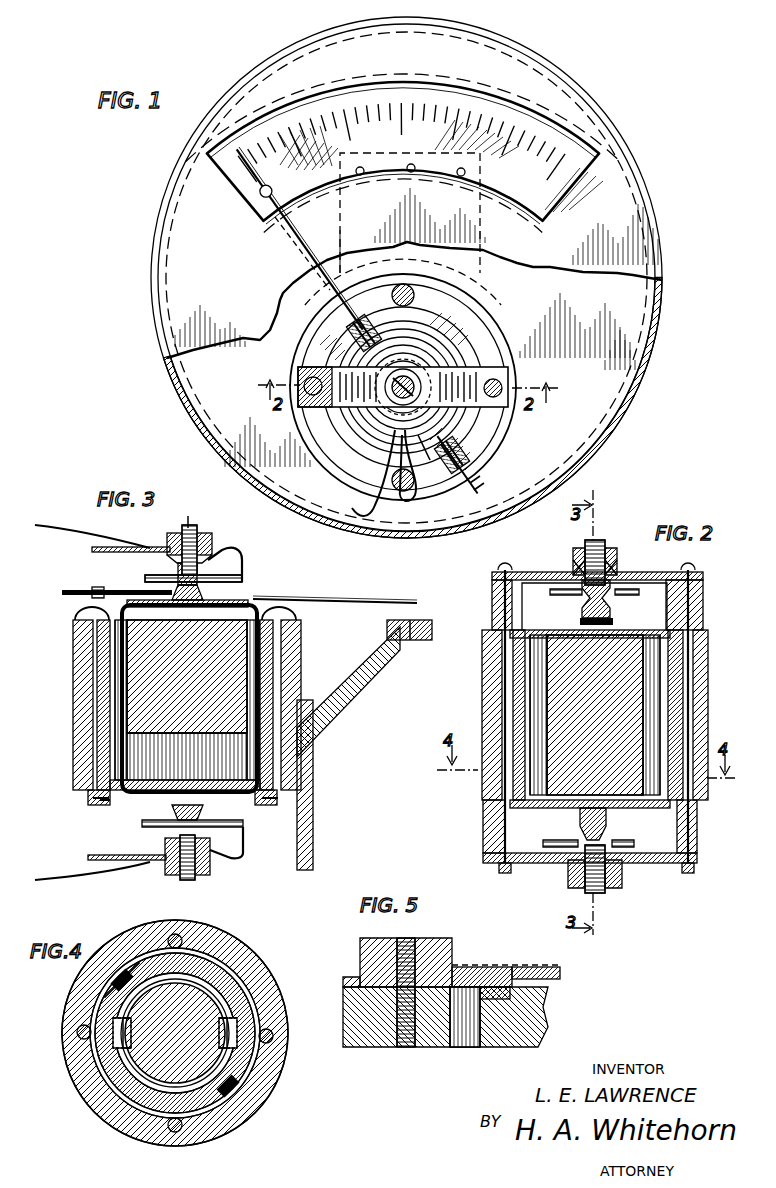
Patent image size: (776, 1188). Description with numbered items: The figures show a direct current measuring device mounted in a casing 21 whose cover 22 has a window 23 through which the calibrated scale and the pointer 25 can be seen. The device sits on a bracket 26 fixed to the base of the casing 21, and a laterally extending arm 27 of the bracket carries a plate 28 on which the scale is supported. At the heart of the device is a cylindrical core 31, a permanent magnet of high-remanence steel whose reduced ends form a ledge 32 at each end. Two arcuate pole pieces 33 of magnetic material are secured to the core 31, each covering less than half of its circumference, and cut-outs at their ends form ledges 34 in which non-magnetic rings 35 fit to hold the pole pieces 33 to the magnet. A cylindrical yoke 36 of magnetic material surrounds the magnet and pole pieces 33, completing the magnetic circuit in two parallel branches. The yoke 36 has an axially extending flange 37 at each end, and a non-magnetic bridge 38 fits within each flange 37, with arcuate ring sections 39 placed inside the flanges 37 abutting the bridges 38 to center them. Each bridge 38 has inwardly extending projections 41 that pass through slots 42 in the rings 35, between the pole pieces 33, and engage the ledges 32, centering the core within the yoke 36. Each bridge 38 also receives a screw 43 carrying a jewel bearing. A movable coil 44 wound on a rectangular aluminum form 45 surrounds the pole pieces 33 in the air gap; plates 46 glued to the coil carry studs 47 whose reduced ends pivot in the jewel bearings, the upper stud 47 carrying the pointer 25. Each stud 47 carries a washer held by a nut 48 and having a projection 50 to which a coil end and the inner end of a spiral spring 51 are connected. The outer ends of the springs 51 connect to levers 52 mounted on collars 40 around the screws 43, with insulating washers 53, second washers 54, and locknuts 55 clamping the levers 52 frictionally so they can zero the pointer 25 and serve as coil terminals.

In FIG. 1, the casing 21 is at (640, 328).
In FIG. 1, the cover 22 is at (633, 232).
In FIG. 1, the window 23 is at (578, 147).
In FIG. 1, the pointer 25 is at (266, 192).
In FIG. 3, the pointer 25 is at (388, 585).
In FIG. 1, the bracket 26 is at (475, 275).
In FIG. 3, the bracket 26 is at (305, 780).
In FIG. 3, the laterally extending arm 27 is at (320, 710).
In FIG. 3, the plate 28 is at (425, 620).
In FIG. 3, the cylindrical core 31 is at (157, 655).
In FIG. 2, the cylindrical core 31 is at (560, 687).
In FIG. 4, the cylindrical core 31 is at (200, 1005).
In FIG. 5, the cylindrical core 31 is at (525, 1030).
In FIG. 5, the ledge 32 is at (548, 975).
In FIG. 3, the pole pieces 33 is at (120, 748).
In FIG. 2, the pole pieces 33 is at (650, 720).
In FIG. 4, the pole pieces 33 is at (205, 985).
In FIG. 5, the pole pieces 33 is at (465, 1048).
In FIG. 5, the ledges 34 is at (490, 985).
In FIG. 3, the rings 35 is at (100, 640).
In FIG. 2, the rings 35 is at (598, 715).
In FIG. 4, the rings 35 is at (110, 1025).
In FIG. 5, the rings 35 is at (478, 975).
In FIG. 3, the cylindrical yoke 36 is at (80, 705).
In FIG. 2, the cylindrical yoke 36 is at (690, 690).
In FIG. 3, the axially extending flange 37 is at (285, 628).
In FIG. 2, the axially extending flange 37 is at (705, 632).
In FIG. 5, the axially extending flange 37 is at (350, 978).
In FIG. 3, the bridge 38 is at (100, 594).
In FIG. 2, the bridge 38 is at (703, 576).
In FIG. 5, the bridge 38 is at (372, 940).
In FIG. 1, the arcuate ring sections 39 is at (493, 355).
In FIG. 2, the collars 40 is at (625, 560).
In FIG. 3, the inwardly extending projections 41 is at (168, 776).
In FIG. 2, the inwardly extending projections 41 is at (648, 630).
In FIG. 4, the inwardly extending projections 41 is at (240, 1032).
In FIG. 5, the inwardly extending projections 41 is at (470, 965).
In FIG. 5, the slots 42 is at (495, 964).
In FIG. 3, the screw 43 is at (192, 530).
In FIG. 2, the screw 43 is at (598, 545).
In FIG. 1, the movable coil 44 is at (362, 328).
In FIG. 3, the movable coil 44 is at (108, 820).
In FIG. 2, the movable coil 44 is at (612, 596).
In FIG. 4, the movable coil 44 is at (130, 985).
In FIG. 3, the form 45 is at (110, 800).
In FIG. 2, the form 45 is at (570, 596).
In FIG. 4, the form 45 is at (115, 995).
In FIG. 3, the plates 46 is at (258, 606).
In FIG. 3, the studs 47 is at (172, 588).
In FIG. 2, the studs 47 is at (603, 585).
In FIG. 3, the nut 48 is at (240, 582).
In FIG. 3, the projection 50 is at (140, 580).
In FIG. 3, the spiral springs 51 is at (230, 562).
In FIG. 2, the spiral springs 51 is at (532, 575).
In FIG. 3, the levers 52 is at (243, 565).
In FIG. 2, the levers 52 is at (572, 575).
In FIG. 3, the insulating washers 53 is at (215, 548).
In FIG. 2, the insulating washers 53 is at (575, 562).
In FIG. 3, the second washer 54 is at (165, 540).
In FIG. 2, the second washer 54 is at (590, 556).
In FIG. 3, the locknuts 55 is at (190, 528).
In FIG. 2, the locknuts 55 is at (603, 548).